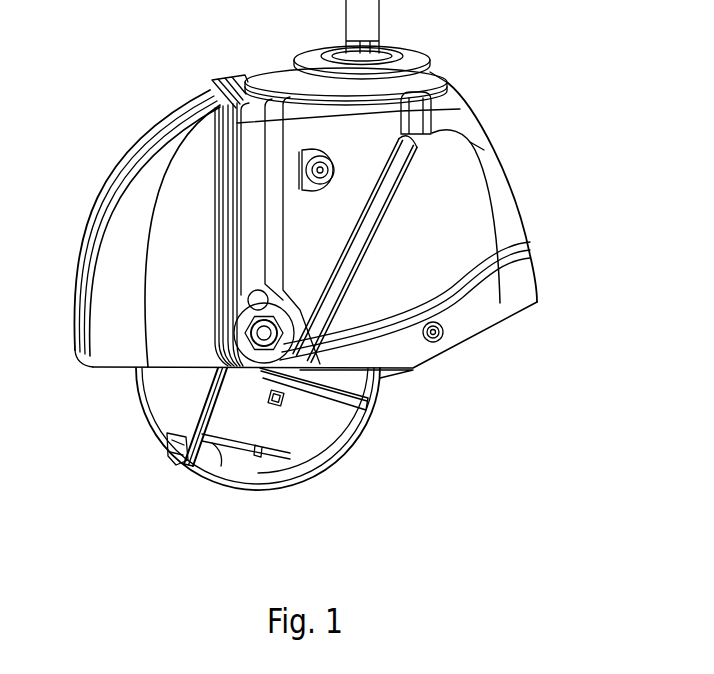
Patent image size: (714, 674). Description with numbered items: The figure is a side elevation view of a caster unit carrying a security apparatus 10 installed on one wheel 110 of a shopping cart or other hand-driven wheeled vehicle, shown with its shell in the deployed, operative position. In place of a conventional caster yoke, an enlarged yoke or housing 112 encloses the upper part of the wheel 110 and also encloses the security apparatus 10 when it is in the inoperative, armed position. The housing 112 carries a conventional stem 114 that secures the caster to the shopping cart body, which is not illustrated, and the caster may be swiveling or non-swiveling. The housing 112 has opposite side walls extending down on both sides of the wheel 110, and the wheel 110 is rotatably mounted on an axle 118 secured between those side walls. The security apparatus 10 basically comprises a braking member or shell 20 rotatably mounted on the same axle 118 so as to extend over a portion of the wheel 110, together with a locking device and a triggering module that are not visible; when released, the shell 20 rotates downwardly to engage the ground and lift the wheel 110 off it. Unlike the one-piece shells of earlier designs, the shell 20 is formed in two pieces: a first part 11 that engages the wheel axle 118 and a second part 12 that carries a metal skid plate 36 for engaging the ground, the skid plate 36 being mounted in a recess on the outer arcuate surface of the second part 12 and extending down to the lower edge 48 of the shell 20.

The security apparatus 10 is at (548, 142).
The first part 11 is at (370, 383).
The second part 12 is at (345, 440).
The shell 20 is at (386, 411).
The skid plate 36 is at (243, 484).
The lower edge 48 is at (170, 437).
The wheel 110 is at (187, 389).
The housing 112 is at (437, 210).
The stem 114 is at (368, 23).
The axle 118 is at (264, 345).